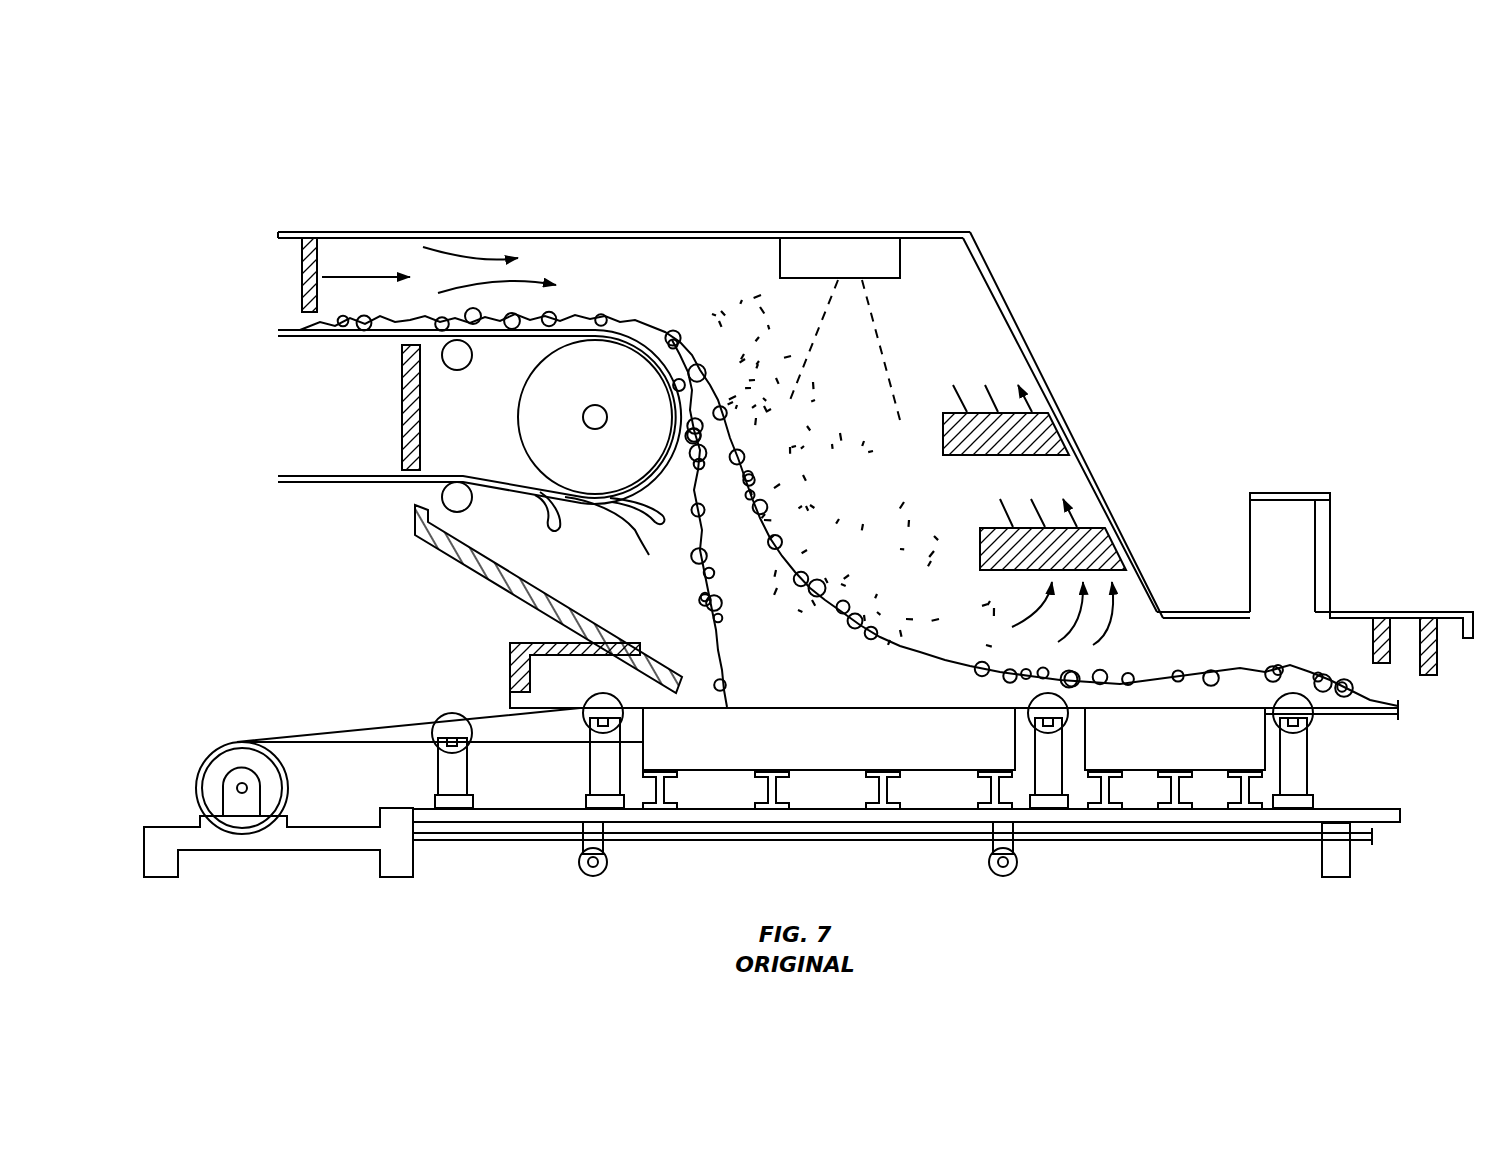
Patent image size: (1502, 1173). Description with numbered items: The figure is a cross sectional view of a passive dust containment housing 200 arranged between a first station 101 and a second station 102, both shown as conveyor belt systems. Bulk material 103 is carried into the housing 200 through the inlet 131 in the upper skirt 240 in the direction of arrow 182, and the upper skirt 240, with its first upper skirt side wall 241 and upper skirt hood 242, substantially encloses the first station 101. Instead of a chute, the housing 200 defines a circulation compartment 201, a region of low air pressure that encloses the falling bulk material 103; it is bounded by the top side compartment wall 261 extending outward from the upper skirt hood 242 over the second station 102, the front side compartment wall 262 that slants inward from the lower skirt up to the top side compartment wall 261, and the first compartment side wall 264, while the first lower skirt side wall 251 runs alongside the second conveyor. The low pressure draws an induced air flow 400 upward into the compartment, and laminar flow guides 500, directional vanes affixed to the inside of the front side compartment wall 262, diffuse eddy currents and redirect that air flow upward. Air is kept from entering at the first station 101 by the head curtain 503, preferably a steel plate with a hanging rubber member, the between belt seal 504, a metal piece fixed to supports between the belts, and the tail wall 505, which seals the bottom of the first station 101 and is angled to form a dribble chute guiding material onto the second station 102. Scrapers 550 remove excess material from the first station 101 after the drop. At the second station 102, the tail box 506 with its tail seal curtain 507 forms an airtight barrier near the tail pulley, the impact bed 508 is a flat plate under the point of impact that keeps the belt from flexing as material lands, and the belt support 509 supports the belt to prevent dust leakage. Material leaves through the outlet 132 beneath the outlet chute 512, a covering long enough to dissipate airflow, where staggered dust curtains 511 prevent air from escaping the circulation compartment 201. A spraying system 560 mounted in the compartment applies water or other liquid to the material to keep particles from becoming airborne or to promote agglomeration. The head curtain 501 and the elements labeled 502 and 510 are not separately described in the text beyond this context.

The first station 101 is at (288, 410).
The second station 102 is at (1380, 718).
The bulk material 103 is at (778, 636).
The inlet 131 is at (256, 297).
The outlet 132 is at (1460, 692).
The arrow 182 is at (345, 277).
The housing 200 is at (674, 202).
The circulation compartment 201 is at (821, 448).
The upper skirt 240 is at (391, 231).
The first upper skirt side wall 241 is at (638, 278).
The upper skirt hood 242 is at (426, 236).
The first lower skirt side wall 251 is at (1202, 651).
The top side compartment wall 261 is at (897, 232).
The front side compartment wall 262 is at (1017, 323).
The first compartment side wall 264 is at (821, 374).
The induced air flow 400 is at (1030, 403).
The laminar flow guides 500 is at (1025, 396).
The head curtain 501 is at (1050, 435).
The heated gas flow 502 is at (1072, 515).
The head curtain 503 is at (300, 268).
The between belt seal 504 is at (400, 423).
The tail wall 505 is at (468, 576).
The tail box 506 is at (510, 658).
The tail seal curtain 507 is at (510, 705).
The impact bed 508 is at (750, 748).
The belt support 509 is at (1167, 748).
The exhaust tower 510 is at (1325, 522).
The dust curtains 511 is at (1420, 630).
The outlet chute 512 is at (1343, 610).
The scrapers 550 is at (627, 523).
The spraying system 560 is at (828, 252).